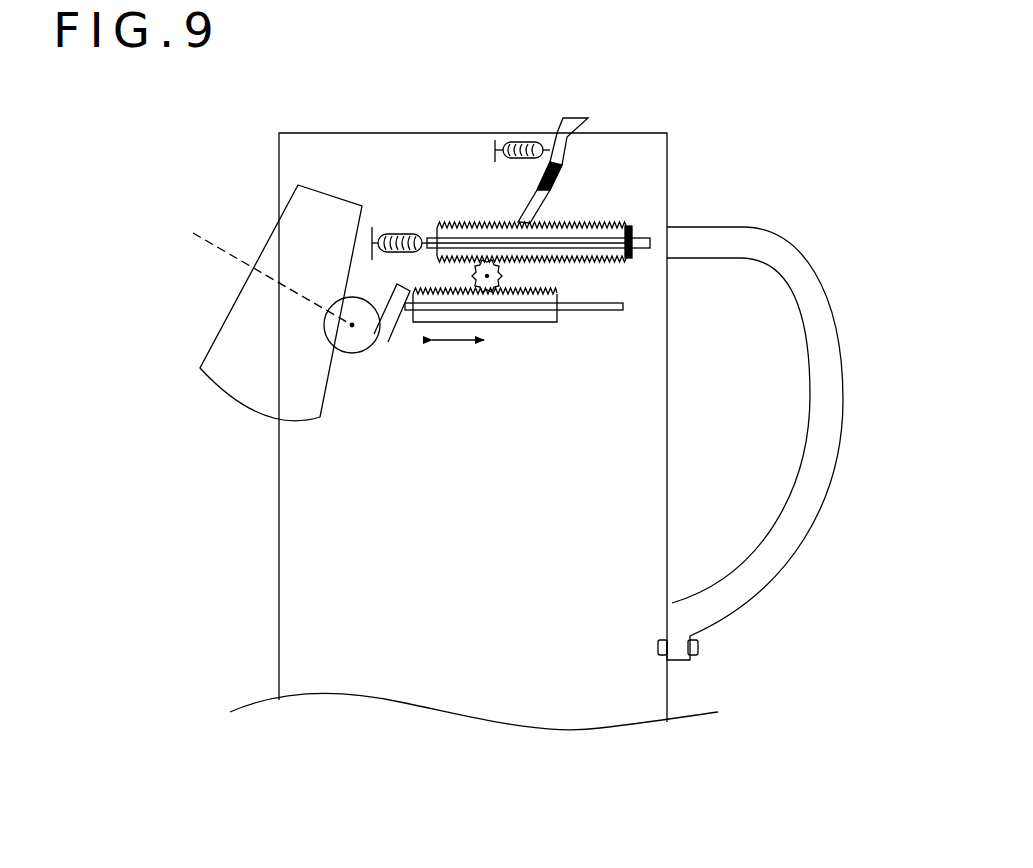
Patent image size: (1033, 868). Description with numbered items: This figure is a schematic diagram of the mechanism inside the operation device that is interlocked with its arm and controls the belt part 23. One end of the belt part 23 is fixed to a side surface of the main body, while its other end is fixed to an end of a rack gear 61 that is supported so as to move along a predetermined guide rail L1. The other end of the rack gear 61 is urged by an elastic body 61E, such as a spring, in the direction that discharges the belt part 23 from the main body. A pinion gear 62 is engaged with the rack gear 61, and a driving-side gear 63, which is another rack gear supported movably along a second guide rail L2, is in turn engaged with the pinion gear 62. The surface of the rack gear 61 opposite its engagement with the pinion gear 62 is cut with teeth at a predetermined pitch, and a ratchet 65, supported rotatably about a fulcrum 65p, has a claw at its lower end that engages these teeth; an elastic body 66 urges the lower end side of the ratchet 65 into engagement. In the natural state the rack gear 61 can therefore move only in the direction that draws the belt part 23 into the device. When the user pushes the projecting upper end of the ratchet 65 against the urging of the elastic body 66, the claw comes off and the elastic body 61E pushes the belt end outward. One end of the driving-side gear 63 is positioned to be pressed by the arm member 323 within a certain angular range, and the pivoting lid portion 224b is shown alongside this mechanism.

The belt part 23 is at (744, 588).
The rack gear 61 is at (573, 225).
The elastic body 61E is at (397, 222).
The pinion gear 62 is at (502, 274).
The driving-side gear 63 is at (526, 336).
The ratchet 65 is at (541, 157).
The fulcrum 65p is at (566, 178).
The elastic body 66 is at (518, 138).
The guide rail L1 is at (640, 254).
The guide rail L2 is at (582, 310).
The lid portion 224b is at (230, 400).
The pivot shaft 323 is at (374, 368).